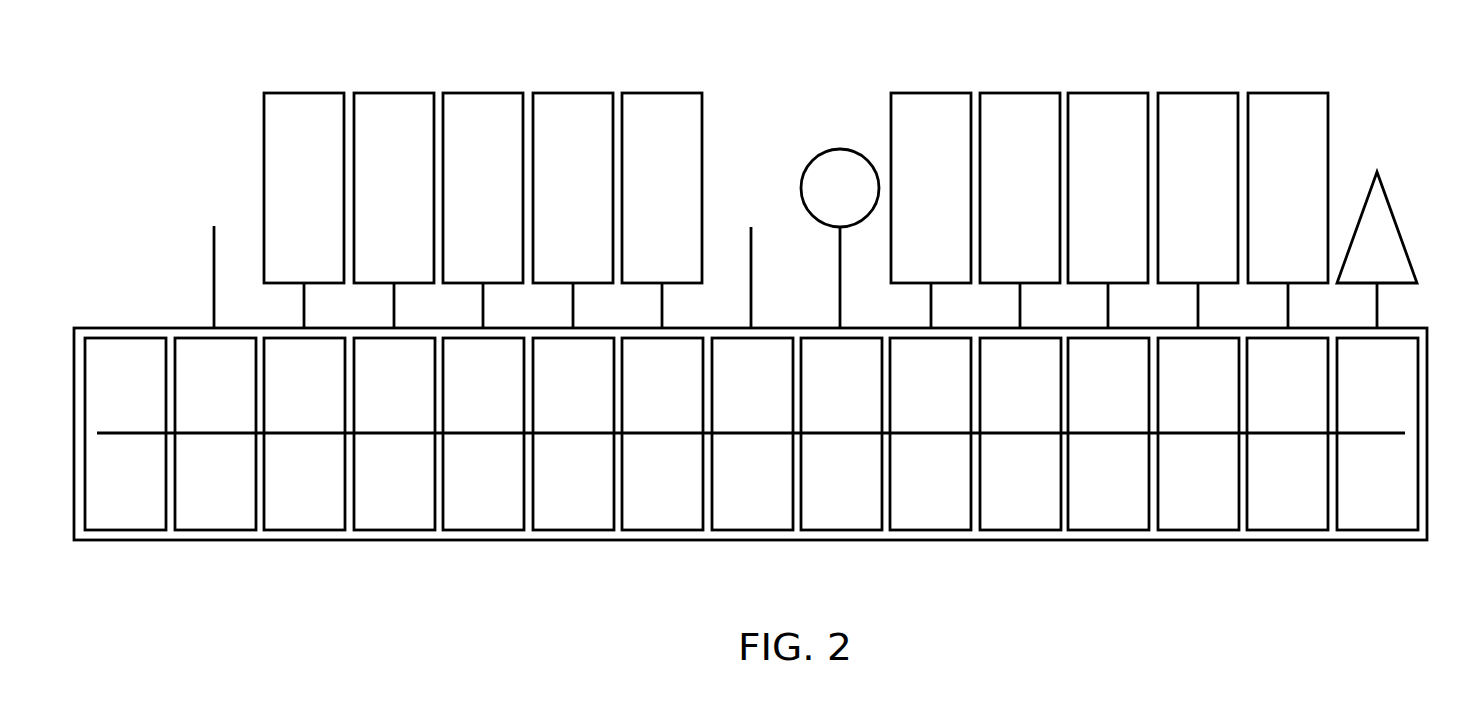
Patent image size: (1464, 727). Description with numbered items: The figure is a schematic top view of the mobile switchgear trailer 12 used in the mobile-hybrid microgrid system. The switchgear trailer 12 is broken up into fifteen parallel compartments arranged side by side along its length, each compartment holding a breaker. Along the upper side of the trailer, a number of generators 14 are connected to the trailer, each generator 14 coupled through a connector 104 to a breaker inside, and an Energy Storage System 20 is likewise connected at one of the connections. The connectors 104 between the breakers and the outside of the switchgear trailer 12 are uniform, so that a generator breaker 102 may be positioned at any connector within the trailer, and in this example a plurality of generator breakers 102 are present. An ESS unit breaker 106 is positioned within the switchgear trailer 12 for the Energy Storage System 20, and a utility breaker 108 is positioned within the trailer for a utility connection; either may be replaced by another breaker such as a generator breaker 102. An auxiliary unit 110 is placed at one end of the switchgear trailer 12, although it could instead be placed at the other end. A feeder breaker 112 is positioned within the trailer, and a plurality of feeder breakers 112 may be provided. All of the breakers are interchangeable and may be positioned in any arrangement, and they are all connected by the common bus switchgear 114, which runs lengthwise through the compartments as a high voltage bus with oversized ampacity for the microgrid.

The mobile switchgear trailer 12 is at (1109, 548).
The generator 14 is at (395, 92).
The Energy Storage System (ESS) 20 is at (1397, 215).
The generator breaker 102 is at (305, 531).
The connector 104 is at (663, 317).
The ESS unit breaker 106 is at (1373, 531).
The utility breaker 108 is at (839, 531).
The auxiliary unit 110 is at (125, 531).
The feeder breaker 112 is at (752, 531).
The common bus switchgear 114 is at (220, 432).